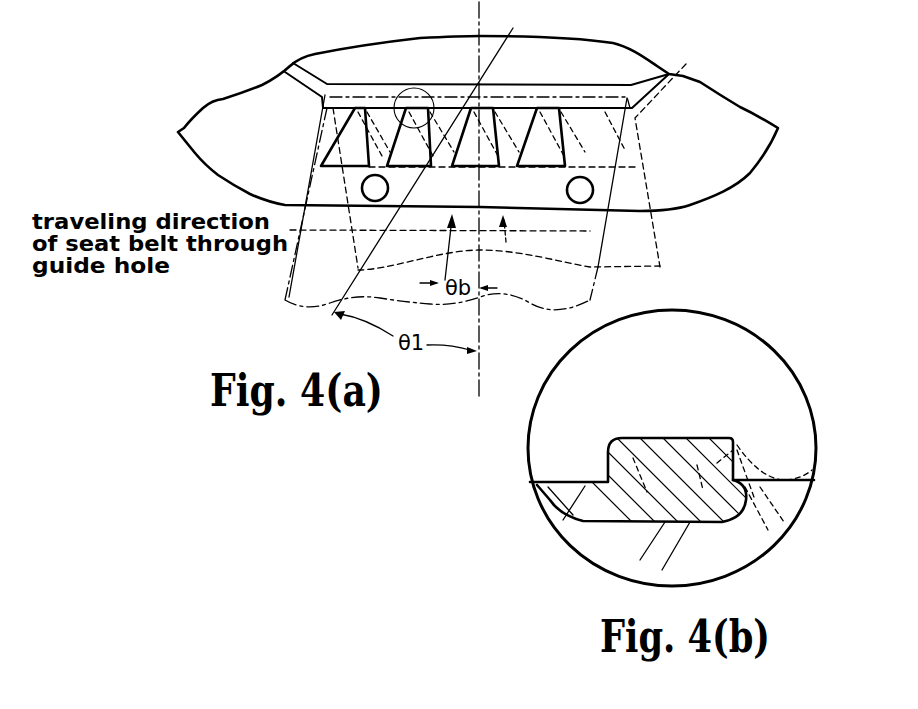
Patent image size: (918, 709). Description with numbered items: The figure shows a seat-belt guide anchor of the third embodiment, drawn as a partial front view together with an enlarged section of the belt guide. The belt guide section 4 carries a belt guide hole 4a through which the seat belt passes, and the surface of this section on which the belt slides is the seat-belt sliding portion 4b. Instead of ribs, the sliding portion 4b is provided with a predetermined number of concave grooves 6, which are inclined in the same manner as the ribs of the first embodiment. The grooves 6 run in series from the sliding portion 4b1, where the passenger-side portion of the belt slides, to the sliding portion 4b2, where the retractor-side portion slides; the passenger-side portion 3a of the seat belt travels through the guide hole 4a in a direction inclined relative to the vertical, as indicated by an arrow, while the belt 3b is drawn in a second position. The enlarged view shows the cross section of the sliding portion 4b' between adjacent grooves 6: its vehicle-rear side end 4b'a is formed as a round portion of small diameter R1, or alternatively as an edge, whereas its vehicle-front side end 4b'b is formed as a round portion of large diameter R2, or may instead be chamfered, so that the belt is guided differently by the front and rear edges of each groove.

In FIG. 4A, the belt guide section 4 is at (735, 155).
In FIG. 4A, the belt guide hole 4a is at (393, 88).
In FIG. 4B, the belt guide hole 4a is at (690, 343).
In FIG. 4A, the seat-belt sliding portion 4b is at (477, 150).
In FIG. 4A, the concave groove 6 is at (377, 111).
In FIG. 4B, the concave groove 6 is at (605, 481).
In FIG. 4A, the sliding portion (passenger side) 4b1 is at (430, 188).
In FIG. 4A, the sliding portion (retractor side) 4b2 is at (122, 179).
In FIG. 4A, the passenger-side portion of the seat belt 3a is at (300, 302).
In FIG. 4A, the seat belt (second position) 3b is at (643, 242).
In FIG. 4B, the seat-belt sliding portion 4b' is at (608, 467).
In FIG. 4B, the vehicle-rear side end 4b'a is at (782, 561).
In FIG. 4B, the vehicle-front side end 4b'b is at (541, 517).
In FIG. 4B, the small diameter R1 is at (738, 437).
In FIG. 4B, the large diameter R2 is at (620, 442).